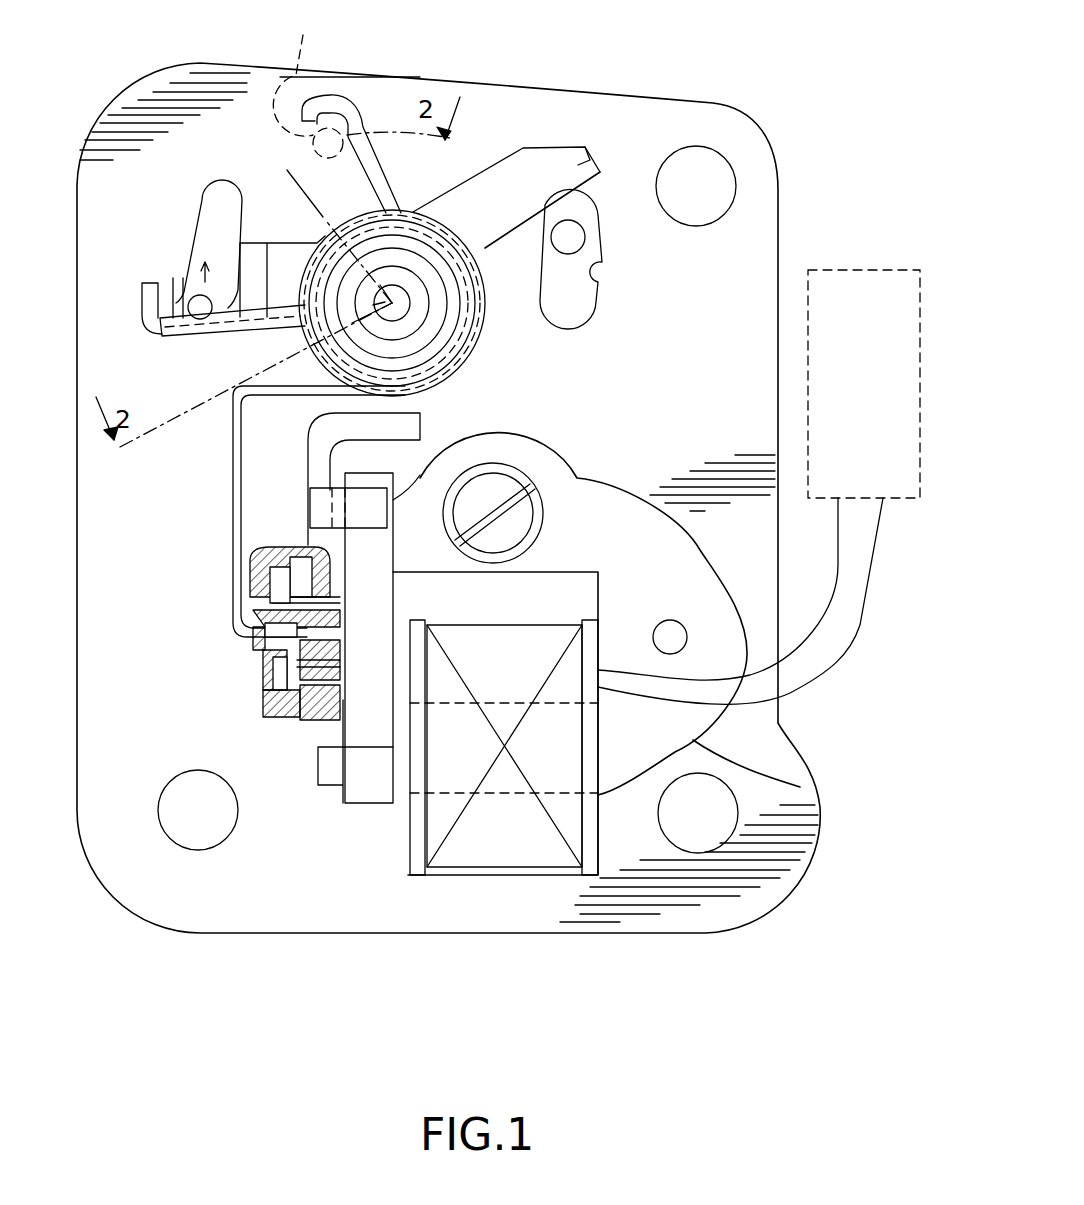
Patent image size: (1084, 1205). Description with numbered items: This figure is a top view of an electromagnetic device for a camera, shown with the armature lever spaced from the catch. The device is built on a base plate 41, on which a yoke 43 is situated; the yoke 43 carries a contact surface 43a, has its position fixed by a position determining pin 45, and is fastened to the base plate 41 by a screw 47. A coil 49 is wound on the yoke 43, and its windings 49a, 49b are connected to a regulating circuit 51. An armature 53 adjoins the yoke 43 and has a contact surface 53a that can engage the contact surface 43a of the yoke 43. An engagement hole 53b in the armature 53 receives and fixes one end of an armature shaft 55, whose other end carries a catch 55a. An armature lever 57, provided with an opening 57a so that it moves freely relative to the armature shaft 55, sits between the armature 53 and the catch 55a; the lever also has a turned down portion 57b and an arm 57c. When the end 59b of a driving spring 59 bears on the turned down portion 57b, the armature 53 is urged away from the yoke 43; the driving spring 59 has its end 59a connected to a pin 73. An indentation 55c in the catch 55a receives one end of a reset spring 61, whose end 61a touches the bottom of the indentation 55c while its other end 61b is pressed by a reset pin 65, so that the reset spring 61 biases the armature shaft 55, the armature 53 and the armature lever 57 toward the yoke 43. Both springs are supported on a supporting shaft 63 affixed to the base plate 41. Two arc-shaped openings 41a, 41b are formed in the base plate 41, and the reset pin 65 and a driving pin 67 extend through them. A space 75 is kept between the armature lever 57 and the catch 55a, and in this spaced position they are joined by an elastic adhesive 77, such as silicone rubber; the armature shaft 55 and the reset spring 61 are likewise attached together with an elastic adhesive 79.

The base plate 41 is at (682, 940).
The arc-shaped opening 41a is at (204, 212).
The arc-shaped opening 41b is at (605, 285).
The yoke 43 is at (802, 787).
The contact surface 43a is at (392, 548).
The position determining pin 45 is at (682, 632).
The screw 47 is at (528, 515).
The coil 49 is at (547, 870).
The winding 49a is at (868, 655).
The winding 49b is at (825, 620).
The regulating circuit 51 is at (872, 270).
The armature 53 is at (380, 735).
The contact surface 53a is at (412, 478).
The engagement hole 53b is at (322, 686).
The armature shaft 55 is at (345, 640).
The catch 55a is at (280, 598).
The indentation 55c is at (302, 632).
The armature lever 57 is at (333, 775).
The opening 57a is at (312, 705).
The turned down portion 57b is at (258, 243).
The arm 57c is at (583, 148).
The driving spring 59 is at (415, 225).
The end of driving spring 59a is at (352, 118).
The end of driving spring 59b is at (200, 334).
The reset spring 61 is at (234, 512).
The end of reset spring 61a is at (290, 640).
The end of reset spring 61b is at (140, 307).
The supporting shaft 63 is at (402, 312).
The reset pin 65 is at (194, 297).
The driving pin 67 is at (582, 243).
The pin 73 is at (344, 110).
The space 75 is at (283, 700).
The elastic adhesive 77 is at (278, 718).
The elastic adhesive 79 is at (262, 655).